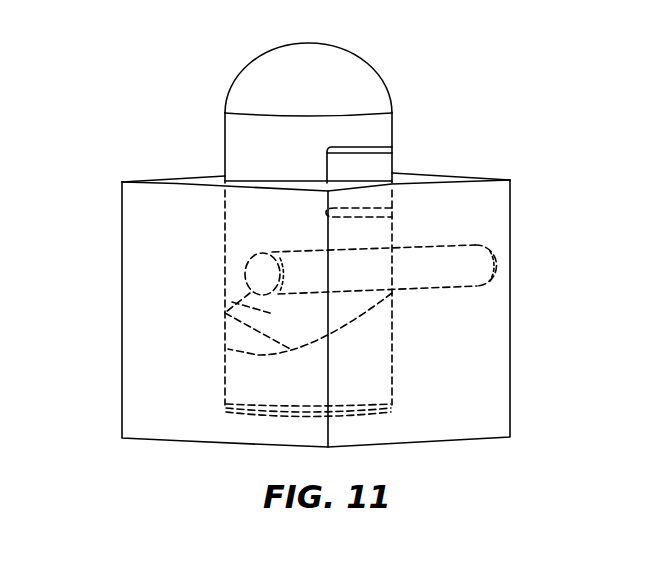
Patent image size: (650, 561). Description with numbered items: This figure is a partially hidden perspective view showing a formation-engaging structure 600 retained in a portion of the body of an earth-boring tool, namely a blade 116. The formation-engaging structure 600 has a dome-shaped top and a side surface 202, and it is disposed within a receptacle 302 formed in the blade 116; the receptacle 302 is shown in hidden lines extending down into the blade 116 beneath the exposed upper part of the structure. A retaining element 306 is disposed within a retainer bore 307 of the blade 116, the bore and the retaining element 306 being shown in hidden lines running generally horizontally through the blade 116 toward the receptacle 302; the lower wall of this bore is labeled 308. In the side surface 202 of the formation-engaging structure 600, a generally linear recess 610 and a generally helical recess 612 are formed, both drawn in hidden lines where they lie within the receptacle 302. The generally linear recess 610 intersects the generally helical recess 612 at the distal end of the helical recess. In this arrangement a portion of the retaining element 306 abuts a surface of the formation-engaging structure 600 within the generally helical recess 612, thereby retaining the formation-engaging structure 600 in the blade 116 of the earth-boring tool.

The blade 116 is at (452, 356).
The formation-engaging structure 600 is at (355, 75).
The side surface 202 is at (392, 131).
The receptacle 302 is at (392, 175).
The retainer bore 307 is at (447, 246).
The retaining element 306 is at (480, 262).
The bore bottom wall 308 is at (460, 287).
The generally linear recess 610 is at (222, 342).
The generally helical recess 612 is at (225, 302).